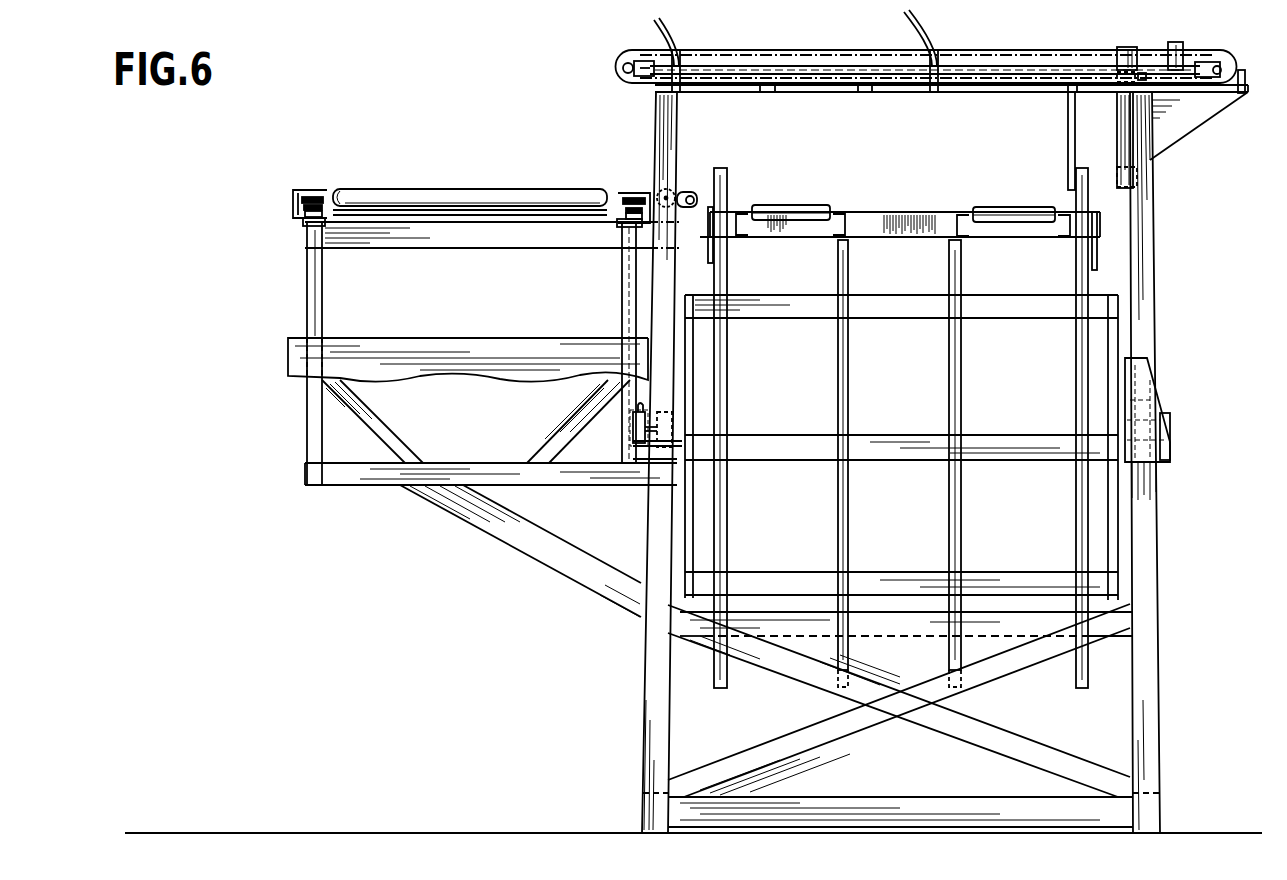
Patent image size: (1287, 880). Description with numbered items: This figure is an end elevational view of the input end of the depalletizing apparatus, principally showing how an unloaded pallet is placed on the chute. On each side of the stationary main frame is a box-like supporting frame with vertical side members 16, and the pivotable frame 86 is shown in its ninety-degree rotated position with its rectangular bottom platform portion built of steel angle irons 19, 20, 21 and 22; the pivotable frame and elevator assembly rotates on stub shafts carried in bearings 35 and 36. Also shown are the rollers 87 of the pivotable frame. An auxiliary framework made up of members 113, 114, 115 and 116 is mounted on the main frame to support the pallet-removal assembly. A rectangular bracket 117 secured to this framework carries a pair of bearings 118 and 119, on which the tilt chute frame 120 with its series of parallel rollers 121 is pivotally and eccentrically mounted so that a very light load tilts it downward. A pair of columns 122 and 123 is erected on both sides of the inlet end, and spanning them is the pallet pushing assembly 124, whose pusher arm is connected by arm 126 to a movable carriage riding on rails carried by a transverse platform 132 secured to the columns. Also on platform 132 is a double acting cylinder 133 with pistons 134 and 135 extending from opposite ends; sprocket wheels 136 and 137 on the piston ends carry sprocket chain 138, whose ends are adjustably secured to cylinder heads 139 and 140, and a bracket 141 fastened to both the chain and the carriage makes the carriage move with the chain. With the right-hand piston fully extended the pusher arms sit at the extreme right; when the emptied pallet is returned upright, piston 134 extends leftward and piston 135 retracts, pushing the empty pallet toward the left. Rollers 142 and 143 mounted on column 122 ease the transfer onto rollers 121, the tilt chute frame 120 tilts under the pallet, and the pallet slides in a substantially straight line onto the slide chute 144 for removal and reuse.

The vertical side members 16 is at (640, 650).
The steel angle iron 19 is at (787, 603).
The steel angle iron 20 is at (728, 513).
The steel angle iron 21 is at (793, 277).
The steel angle iron 22 is at (1075, 515).
The bearing 35 is at (637, 405).
The bearing 36 is at (1172, 423).
The pivotable frame 86 is at (910, 207).
The rollers 87 is at (808, 203).
The auxiliary framework member 113 is at (598, 485).
The auxiliary framework member 114 is at (305, 442).
The auxiliary framework member 115 is at (553, 570).
The auxiliary framework member 116 is at (620, 438).
The rectangular bracket 117 is at (493, 250).
The bearing 118 is at (298, 228).
The bearing 119 is at (616, 226).
The tilt chute frame 120 is at (293, 198).
The rollers 121 is at (434, 172).
The column 122 is at (656, 143).
The column 123 is at (1151, 187).
The pallet pushing assembly 124 is at (921, 61).
The arm 126 is at (1116, 137).
The transverse platform 132 is at (905, 95).
The double acting cylinder 133 is at (810, 60).
The piston 134 is at (660, 54).
The piston 135 is at (1025, 60).
The sprocket wheel 136 is at (645, 85).
The sprocket wheel 137 is at (1198, 60).
The sprocket chain 138 is at (762, 52).
The cylinder head 139 is at (678, 52).
The cylinder head 140 is at (937, 55).
The bracket 141 is at (1127, 43).
The roller 142 is at (657, 188).
The roller 143 is at (678, 193).
The slide chute 144 is at (288, 362).